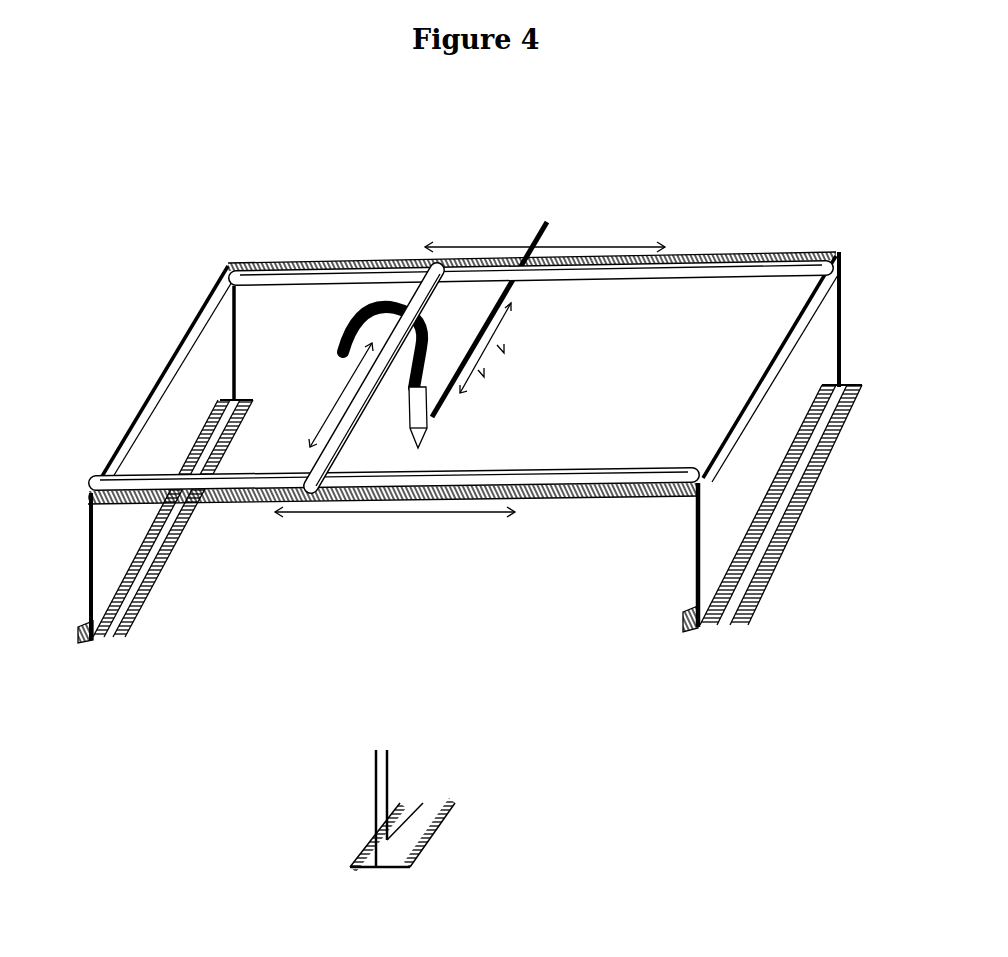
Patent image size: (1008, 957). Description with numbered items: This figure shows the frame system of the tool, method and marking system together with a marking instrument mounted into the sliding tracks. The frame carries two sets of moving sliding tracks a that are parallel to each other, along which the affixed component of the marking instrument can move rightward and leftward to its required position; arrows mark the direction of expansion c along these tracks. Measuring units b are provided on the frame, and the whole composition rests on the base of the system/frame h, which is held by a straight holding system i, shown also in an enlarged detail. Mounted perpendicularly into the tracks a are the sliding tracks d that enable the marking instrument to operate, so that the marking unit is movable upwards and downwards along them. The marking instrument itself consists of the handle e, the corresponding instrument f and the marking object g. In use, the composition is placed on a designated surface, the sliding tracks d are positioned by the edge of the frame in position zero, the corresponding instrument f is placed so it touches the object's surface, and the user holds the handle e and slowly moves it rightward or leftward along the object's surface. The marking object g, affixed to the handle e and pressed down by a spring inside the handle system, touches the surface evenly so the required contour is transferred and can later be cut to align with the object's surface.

The moving sliding tracks a is at (461, 374).
The measuring units b is at (471, 430).
The direction of expansion c is at (470, 382).
The sliding tracks enabling to operate by the marking instrument d is at (385, 378).
The handle e is at (371, 347).
The corresponding instrument f is at (489, 324).
The marking object g is at (408, 427).
The base of the system/frame h is at (477, 628).
The straight holding system i is at (345, 882).